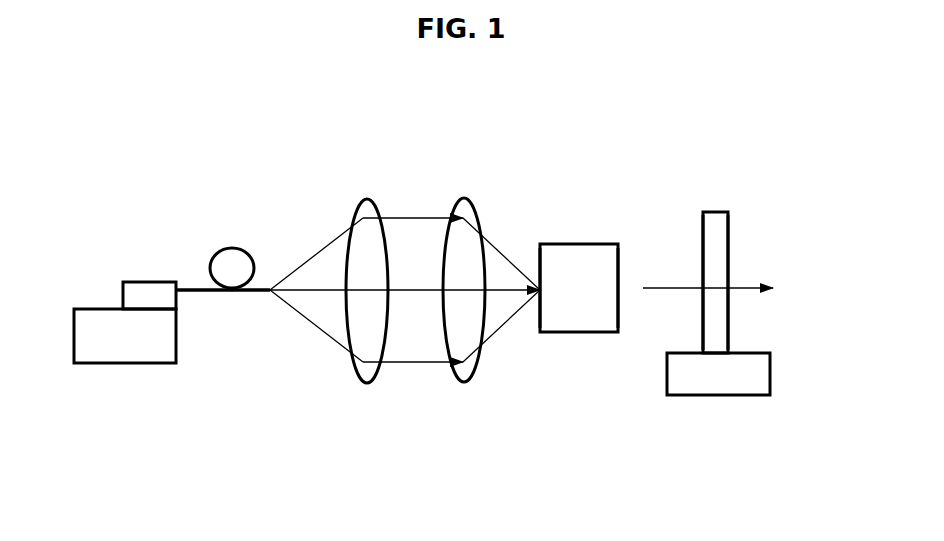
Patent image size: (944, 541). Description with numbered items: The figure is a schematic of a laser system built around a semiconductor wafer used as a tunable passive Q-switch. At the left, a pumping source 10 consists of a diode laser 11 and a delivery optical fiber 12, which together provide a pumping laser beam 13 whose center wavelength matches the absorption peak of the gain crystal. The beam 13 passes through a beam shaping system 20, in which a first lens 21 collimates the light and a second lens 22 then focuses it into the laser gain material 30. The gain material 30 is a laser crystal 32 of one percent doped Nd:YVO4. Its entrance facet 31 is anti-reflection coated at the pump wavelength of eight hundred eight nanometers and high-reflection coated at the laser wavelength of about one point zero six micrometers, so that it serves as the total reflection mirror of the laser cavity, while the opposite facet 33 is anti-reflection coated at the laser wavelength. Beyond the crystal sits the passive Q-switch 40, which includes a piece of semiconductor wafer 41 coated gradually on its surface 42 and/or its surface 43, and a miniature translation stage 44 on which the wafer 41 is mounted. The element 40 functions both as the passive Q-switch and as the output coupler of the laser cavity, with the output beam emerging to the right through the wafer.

The pumping source 10 is at (182, 296).
The diode laser 11 is at (158, 338).
The delivery optical fiber 12 is at (238, 288).
The pumping laser beam 13 is at (290, 308).
The beam shaping system 20 is at (403, 287).
The first lens 21 is at (373, 337).
The second lens 22 is at (457, 337).
The laser gain material 30 is at (569, 294).
The facet 31 is at (538, 308).
The laser crystal 32 is at (588, 308).
The facet 33 is at (619, 308).
The passive Q-switch 40 is at (729, 280).
The semiconductor wafer 41 is at (720, 252).
The surface 42 is at (728, 263).
The surface 43 is at (700, 237).
The miniature translation stage 44 is at (722, 375).